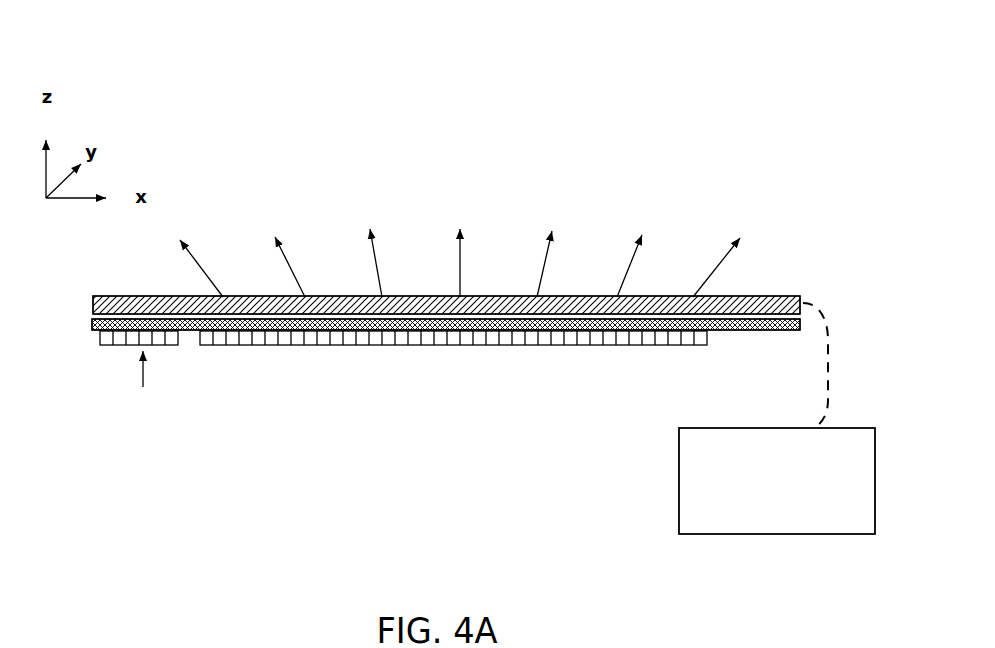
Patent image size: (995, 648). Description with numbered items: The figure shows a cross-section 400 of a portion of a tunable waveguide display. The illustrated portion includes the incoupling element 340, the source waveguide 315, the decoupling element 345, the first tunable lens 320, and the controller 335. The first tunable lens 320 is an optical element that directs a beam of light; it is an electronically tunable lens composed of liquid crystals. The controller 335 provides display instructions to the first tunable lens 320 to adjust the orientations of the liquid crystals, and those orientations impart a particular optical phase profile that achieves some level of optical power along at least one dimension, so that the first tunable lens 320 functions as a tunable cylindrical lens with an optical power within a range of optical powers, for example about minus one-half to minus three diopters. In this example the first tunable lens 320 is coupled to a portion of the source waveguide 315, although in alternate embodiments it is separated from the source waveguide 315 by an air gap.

The cross-section 400 is at (122, 22).
The first tunable lens 320 is at (447, 297).
The source waveguide 315 is at (182, 322).
The incoupling element 340 is at (98, 337).
The decoupling element 345 is at (423, 340).
The controller 335 is at (777, 418).